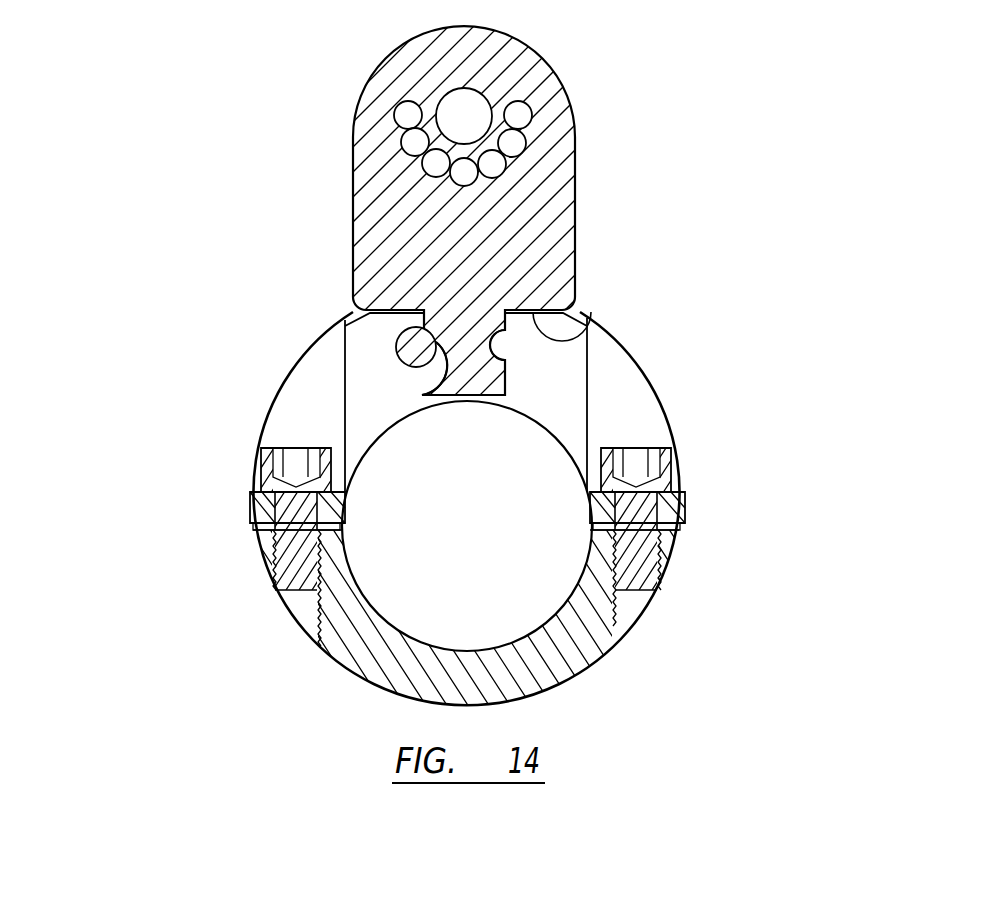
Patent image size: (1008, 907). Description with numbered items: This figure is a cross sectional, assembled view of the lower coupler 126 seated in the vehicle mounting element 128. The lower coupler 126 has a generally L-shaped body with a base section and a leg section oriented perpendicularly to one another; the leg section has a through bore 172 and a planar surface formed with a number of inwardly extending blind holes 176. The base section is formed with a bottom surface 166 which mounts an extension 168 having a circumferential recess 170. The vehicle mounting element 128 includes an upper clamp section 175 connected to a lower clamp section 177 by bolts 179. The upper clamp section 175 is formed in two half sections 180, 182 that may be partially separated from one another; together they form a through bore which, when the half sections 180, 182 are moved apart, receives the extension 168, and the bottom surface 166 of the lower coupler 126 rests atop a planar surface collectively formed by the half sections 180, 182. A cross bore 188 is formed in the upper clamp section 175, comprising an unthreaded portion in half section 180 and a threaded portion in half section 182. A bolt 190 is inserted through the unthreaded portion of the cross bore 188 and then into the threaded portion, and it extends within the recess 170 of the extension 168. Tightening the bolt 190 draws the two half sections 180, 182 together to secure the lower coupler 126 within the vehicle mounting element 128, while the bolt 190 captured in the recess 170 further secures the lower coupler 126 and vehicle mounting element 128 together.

The lower coupler 126 is at (700, 75).
The vehicle mounting element 128 is at (776, 461).
The bottom surface 166 is at (591, 330).
The extension 168 is at (508, 377).
The circumferential recess 170 is at (503, 349).
The through bore 172 is at (473, 102).
The upper clamp section 175 is at (190, 469).
The blind holes 176 is at (315, 105).
The lower clamp section 177 is at (326, 697).
The bolts 179 is at (277, 543).
The half section 180 is at (362, 308).
The half section 182 is at (568, 410).
The cross bore 188 is at (424, 388).
The bolt 190 is at (397, 343).